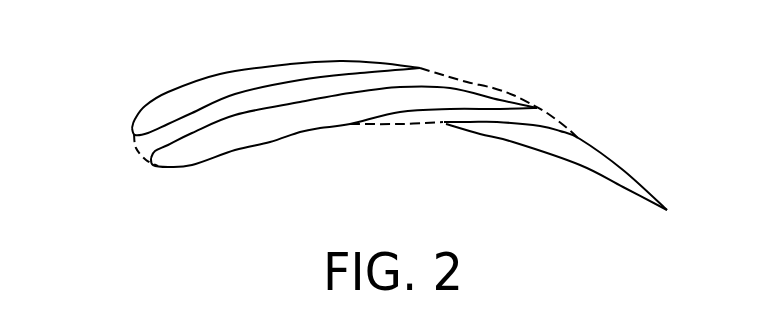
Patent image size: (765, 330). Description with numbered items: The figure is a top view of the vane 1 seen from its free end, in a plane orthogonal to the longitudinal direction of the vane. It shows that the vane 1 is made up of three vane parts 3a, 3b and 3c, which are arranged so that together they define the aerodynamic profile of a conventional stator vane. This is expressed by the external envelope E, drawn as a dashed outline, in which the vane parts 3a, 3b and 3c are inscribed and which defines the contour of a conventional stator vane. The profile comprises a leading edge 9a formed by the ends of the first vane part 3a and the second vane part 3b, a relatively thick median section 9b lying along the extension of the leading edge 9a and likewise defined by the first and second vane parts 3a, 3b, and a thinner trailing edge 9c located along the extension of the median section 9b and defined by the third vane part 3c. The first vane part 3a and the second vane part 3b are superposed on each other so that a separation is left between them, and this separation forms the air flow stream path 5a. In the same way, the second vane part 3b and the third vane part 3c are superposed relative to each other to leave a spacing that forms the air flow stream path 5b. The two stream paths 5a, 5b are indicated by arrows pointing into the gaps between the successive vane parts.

The vane 1 is at (358, 130).
The first vane part 3a is at (276, 72).
The second vane part 3b is at (287, 122).
The third vane part 3c is at (555, 162).
The air flow stream path 5a is at (215, 117).
The air flow stream path 5b is at (443, 122).
The leading edge 9a is at (158, 143).
The median section 9b is at (303, 88).
The trailing edge 9c is at (605, 168).
The external envelope E is at (325, 95).